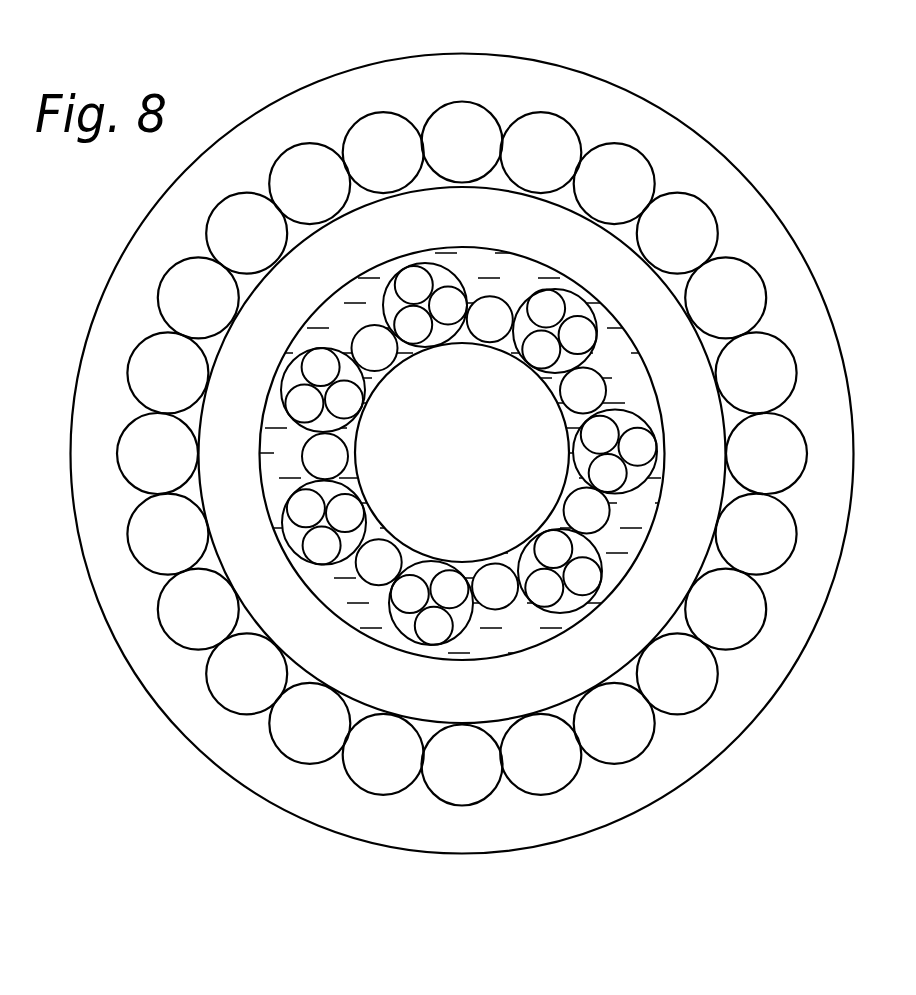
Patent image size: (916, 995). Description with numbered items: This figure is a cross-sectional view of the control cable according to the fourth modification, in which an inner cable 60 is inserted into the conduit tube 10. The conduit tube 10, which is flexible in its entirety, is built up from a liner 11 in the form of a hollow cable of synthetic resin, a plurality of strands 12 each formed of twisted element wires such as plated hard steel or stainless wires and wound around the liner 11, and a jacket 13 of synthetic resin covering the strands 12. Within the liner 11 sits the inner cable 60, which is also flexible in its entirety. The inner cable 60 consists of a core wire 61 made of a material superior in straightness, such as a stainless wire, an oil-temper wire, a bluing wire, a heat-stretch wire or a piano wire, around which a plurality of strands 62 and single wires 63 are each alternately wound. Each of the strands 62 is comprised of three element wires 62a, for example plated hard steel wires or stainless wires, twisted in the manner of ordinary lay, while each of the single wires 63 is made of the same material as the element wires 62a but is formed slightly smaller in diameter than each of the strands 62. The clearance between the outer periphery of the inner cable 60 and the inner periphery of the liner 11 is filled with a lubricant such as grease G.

The conduit tube 10 is at (766, 187).
The liner 11 is at (563, 205).
The strands 12 is at (774, 336).
The jacket 13 is at (724, 154).
The inner cable 60 is at (640, 522).
The core wire 61 is at (477, 477).
The strands 62 is at (469, 454).
The element wires 62a is at (442, 330).
The single wires 63 is at (467, 568).
The grease G is at (610, 543).